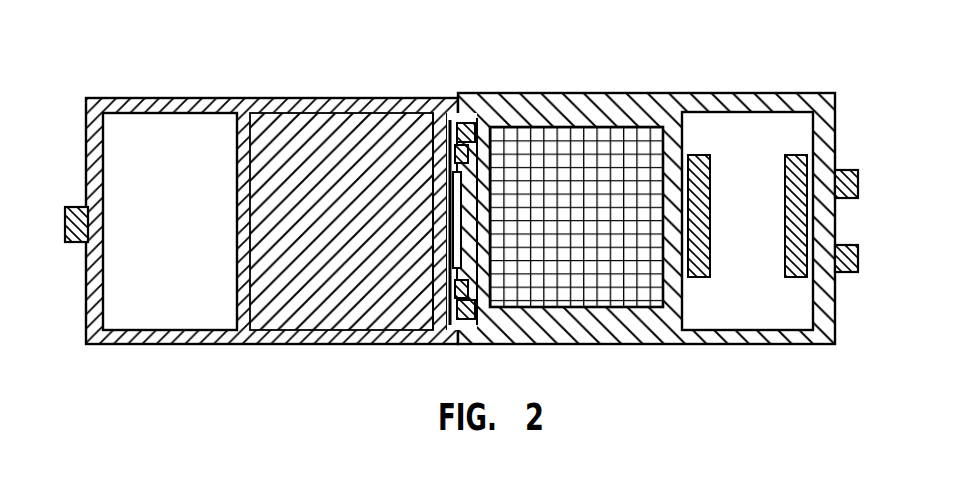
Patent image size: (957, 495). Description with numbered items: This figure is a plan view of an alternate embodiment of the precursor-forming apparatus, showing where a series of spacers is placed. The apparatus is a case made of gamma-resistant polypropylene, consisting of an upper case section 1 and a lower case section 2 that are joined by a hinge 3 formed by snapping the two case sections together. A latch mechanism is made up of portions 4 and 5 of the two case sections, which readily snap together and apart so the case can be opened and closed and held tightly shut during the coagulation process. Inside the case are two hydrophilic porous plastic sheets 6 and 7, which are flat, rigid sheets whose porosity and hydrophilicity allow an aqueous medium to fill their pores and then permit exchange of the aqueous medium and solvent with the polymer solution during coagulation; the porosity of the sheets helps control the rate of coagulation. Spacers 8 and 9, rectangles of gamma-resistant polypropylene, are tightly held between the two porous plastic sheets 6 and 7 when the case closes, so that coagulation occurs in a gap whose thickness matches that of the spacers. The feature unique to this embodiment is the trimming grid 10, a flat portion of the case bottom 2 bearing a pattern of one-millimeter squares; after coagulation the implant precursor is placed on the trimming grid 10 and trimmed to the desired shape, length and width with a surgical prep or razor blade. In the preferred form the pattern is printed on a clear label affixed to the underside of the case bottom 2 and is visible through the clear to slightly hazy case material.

The upper case section 1 is at (305, 99).
The lower case section 2 is at (660, 95).
The hinge 3 is at (454, 93).
The latch portion 4 is at (78, 244).
The latch portion 5 is at (857, 243).
The hydrophilic porous plastic sheet 6 is at (180, 187).
The hydrophilic porous plastic sheet 7 is at (758, 174).
The spacer 8 is at (710, 278).
The spacer 9 is at (787, 278).
The trimming grid 10 is at (568, 185).